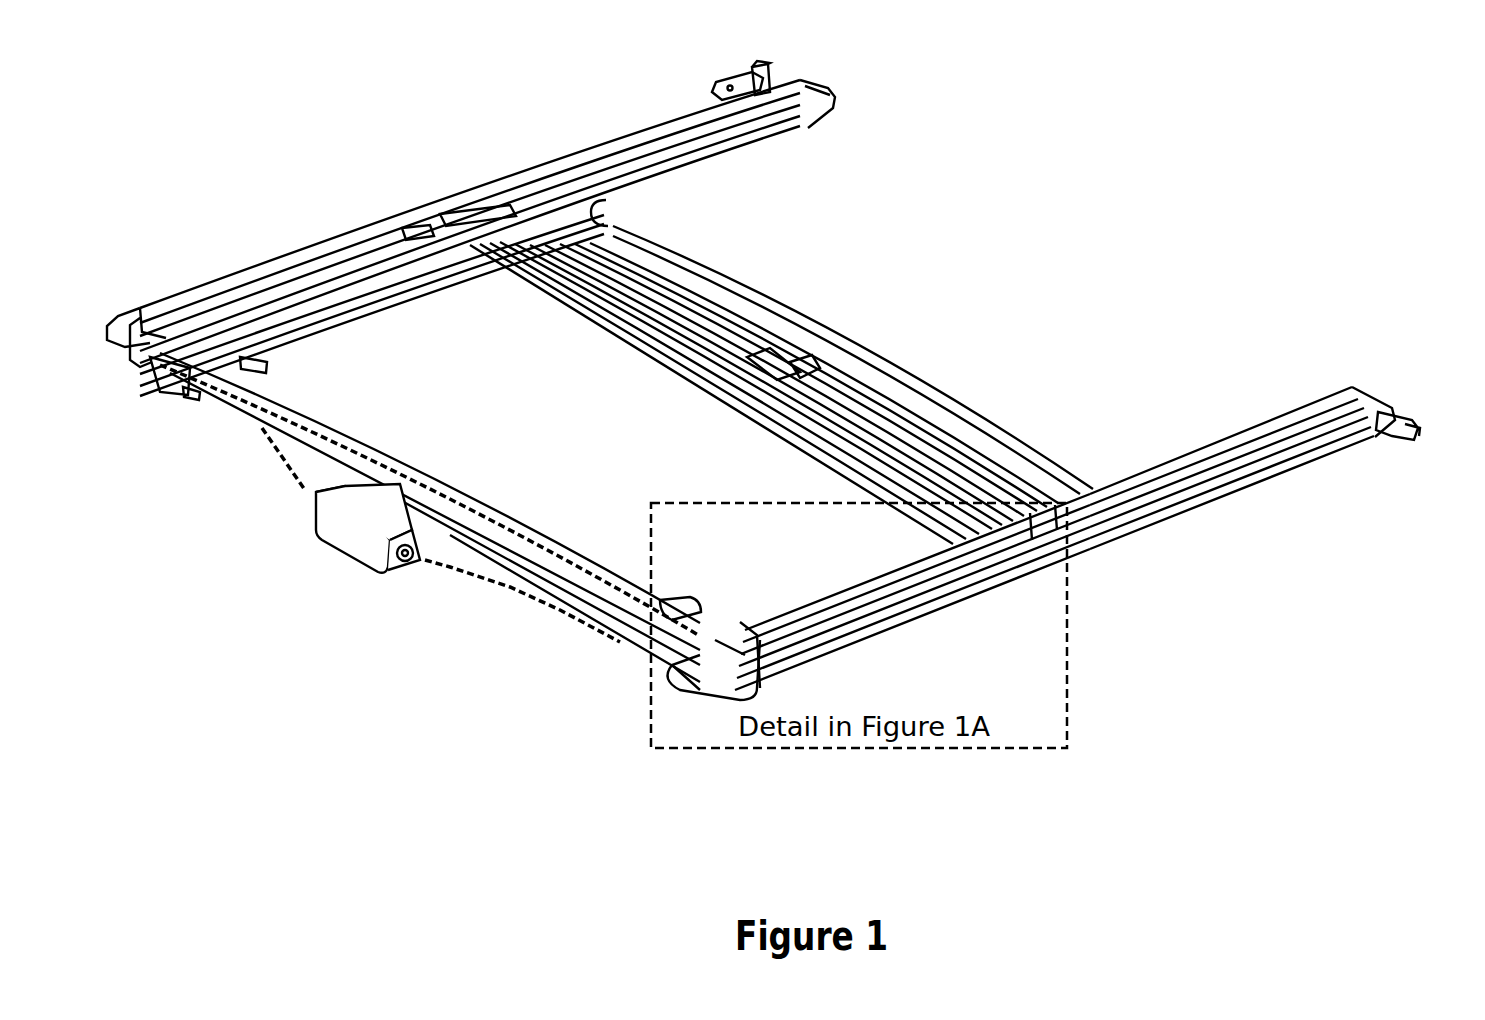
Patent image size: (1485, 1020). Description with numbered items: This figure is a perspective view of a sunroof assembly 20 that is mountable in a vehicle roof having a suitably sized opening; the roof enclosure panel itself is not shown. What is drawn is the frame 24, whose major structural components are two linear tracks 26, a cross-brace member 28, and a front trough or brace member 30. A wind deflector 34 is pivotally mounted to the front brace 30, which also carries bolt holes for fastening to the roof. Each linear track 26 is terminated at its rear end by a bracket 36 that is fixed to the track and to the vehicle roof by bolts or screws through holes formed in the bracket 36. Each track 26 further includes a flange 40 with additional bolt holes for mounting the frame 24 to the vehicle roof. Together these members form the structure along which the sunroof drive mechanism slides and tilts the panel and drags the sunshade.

The sunroof assembly 20 is at (795, 380).
The frame 24 is at (948, 399).
The linear track 26 is at (358, 198).
The cross-brace member 28 is at (783, 350).
The front trough or brace member 30 is at (520, 520).
The wind deflector 34 is at (630, 600).
The bracket 36 is at (1387, 437).
The flange 40 is at (1170, 515).